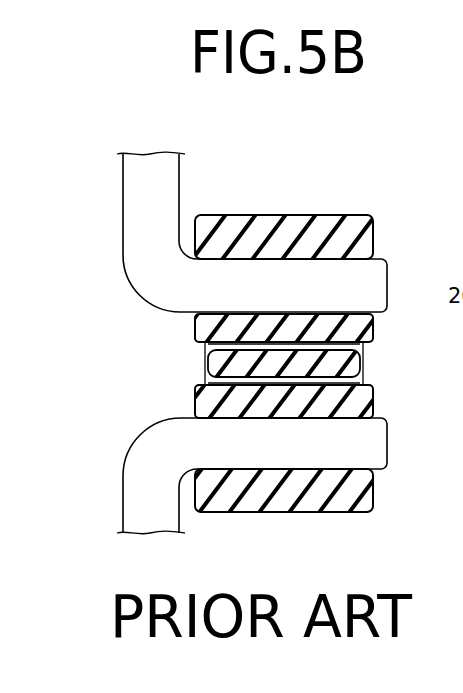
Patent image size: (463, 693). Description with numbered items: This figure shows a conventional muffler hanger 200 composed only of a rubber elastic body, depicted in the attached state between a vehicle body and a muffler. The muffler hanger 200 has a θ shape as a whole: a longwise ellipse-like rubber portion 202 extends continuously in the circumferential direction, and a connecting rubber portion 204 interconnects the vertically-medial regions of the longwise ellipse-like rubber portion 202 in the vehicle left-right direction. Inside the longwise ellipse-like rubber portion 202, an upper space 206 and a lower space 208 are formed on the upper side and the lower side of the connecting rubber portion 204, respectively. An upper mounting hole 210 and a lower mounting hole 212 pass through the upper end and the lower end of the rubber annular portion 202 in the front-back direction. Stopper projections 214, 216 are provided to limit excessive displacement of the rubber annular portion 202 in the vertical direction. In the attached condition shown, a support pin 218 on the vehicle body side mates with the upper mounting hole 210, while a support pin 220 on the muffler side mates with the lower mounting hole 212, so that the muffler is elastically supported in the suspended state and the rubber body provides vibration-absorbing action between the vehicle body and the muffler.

The muffler hanger 200 is at (345, 191).
The longwise ellipse-like rubber portion 202 is at (367, 224).
The connecting rubber portion 204 is at (207, 367).
The upper space 206 is at (262, 346).
The lower space 208 is at (215, 384).
The upper mounting hole 210 is at (290, 262).
The lower mounting hole 212 is at (291, 470).
The stopper projection 214 is at (330, 345).
The stopper projection 216 is at (358, 388).
The support pin 218 is at (145, 281).
The support pin 220 is at (157, 440).